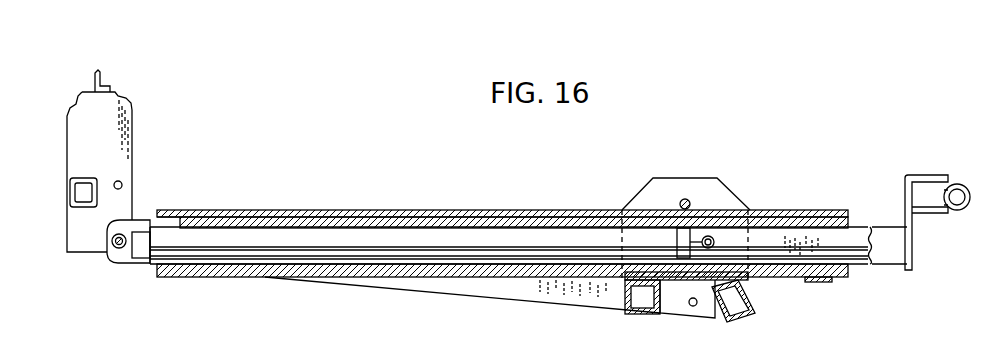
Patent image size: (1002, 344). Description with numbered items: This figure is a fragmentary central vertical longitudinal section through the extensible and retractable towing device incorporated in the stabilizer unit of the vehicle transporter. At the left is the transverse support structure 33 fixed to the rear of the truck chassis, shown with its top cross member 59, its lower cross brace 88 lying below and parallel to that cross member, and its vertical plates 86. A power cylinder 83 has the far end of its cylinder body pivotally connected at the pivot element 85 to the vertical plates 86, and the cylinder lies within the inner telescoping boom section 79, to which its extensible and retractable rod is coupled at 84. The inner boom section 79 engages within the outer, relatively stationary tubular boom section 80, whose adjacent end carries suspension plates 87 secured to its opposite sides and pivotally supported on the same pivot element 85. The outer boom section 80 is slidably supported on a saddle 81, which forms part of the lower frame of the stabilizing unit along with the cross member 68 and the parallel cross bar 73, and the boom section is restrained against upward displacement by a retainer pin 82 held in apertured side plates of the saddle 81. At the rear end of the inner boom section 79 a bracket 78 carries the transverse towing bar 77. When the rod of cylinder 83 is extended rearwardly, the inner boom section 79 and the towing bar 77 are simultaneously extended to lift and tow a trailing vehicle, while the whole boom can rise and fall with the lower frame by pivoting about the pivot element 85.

The support structure 33 is at (134, 148).
The top cross member 59 is at (105, 79).
The cross member 68 is at (628, 315).
The cross bar 73 is at (745, 320).
The towing bar 77 is at (970, 200).
The bracket 78 is at (905, 196).
The inner telescoping boom section 79 is at (886, 268).
The outer tubular boom section 80 is at (773, 212).
The saddle 81 is at (686, 295).
The retainer pin 82 is at (690, 200).
The power cylinder 83 is at (470, 246).
The rod coupling 84 is at (714, 242).
The pivot element 85 is at (113, 252).
The vertical plates 86 is at (124, 163).
The suspension plates 87 is at (140, 219).
The lower cross brace 88 is at (100, 177).